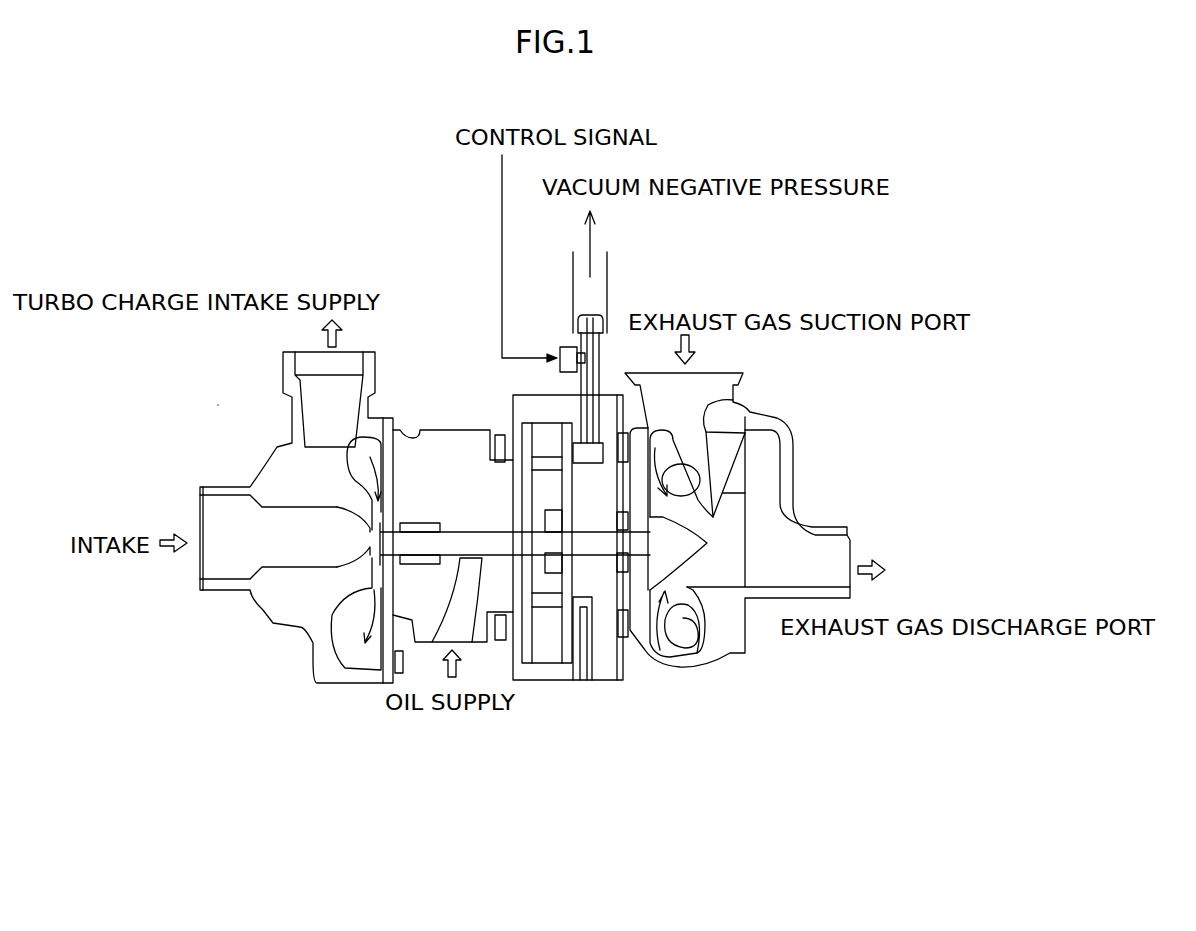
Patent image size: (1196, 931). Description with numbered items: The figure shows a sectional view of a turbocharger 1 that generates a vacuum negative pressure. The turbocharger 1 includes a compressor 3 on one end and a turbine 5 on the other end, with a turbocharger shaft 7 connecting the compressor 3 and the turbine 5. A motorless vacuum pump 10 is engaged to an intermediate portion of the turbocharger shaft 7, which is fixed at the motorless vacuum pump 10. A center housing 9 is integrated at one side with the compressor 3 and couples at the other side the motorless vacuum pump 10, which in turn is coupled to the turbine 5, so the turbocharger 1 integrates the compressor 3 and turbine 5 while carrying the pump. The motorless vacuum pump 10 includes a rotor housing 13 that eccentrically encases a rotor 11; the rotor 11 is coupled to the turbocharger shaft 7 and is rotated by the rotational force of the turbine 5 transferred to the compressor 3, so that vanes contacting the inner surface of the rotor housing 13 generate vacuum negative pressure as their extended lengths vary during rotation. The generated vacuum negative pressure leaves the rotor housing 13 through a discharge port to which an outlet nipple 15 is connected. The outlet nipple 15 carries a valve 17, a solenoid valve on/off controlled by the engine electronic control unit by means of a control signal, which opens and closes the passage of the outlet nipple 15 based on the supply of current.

The turbocharger 1 is at (217, 404).
The compressor 3 is at (282, 601).
The turbine 5 is at (758, 505).
The turbocharger shaft 7 is at (465, 540).
The center housing 9 is at (423, 430).
The motorless vacuum pump 10 is at (577, 750).
The rotor 11 is at (553, 683).
The rotor housing 13 is at (608, 663).
The outlet nipple 15 is at (590, 328).
The valve 17 is at (563, 363).